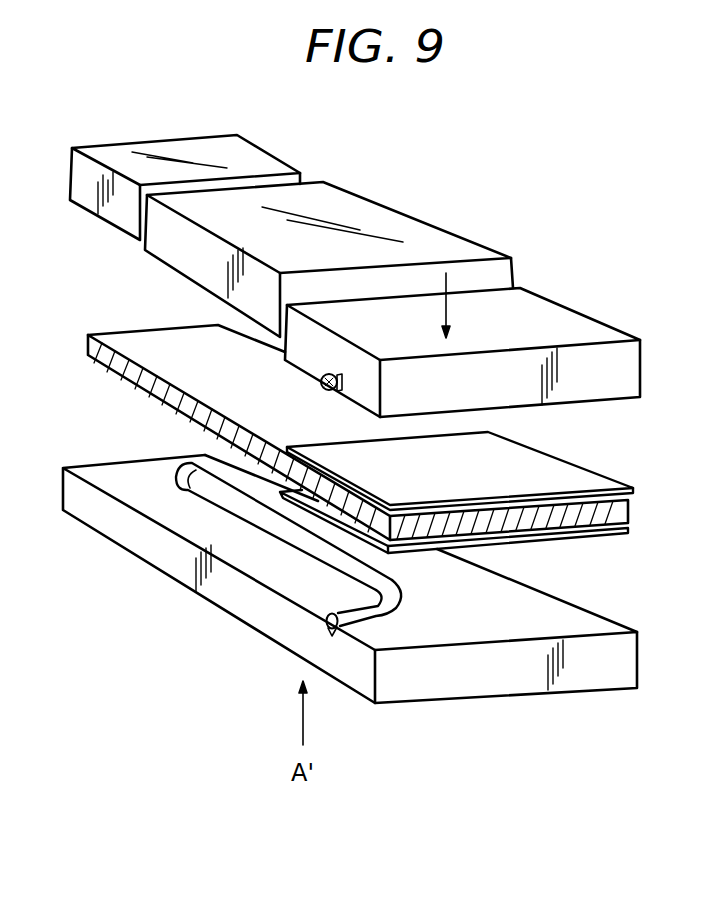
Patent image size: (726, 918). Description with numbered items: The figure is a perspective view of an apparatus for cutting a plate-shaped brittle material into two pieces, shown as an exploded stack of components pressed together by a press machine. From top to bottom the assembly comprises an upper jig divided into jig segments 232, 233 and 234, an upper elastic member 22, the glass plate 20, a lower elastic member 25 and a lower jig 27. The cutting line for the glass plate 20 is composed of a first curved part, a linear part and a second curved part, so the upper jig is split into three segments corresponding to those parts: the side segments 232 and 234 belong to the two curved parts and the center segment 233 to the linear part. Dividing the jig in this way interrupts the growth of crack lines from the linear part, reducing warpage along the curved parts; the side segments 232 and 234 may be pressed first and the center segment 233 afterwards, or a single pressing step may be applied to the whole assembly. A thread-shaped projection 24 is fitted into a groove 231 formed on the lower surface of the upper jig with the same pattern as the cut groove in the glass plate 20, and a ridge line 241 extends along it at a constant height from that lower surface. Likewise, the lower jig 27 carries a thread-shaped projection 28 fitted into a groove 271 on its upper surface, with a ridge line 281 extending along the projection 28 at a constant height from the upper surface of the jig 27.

The glass plate 20 is at (631, 512).
The upper elastic member 22 is at (634, 489).
The thread-shaped projection 24 is at (320, 383).
The lower elastic member 25 is at (632, 532).
The lower jig 27 is at (640, 648).
The thread-shaped projection 28 is at (377, 612).
The groove 231 is at (324, 377).
The side jig segment 232 is at (640, 372).
The center jig segment 233 is at (422, 221).
The side jig segment 234 is at (263, 152).
The ridge line 241 is at (330, 392).
The groove 271 is at (326, 632).
The ridge line 281 is at (400, 588).